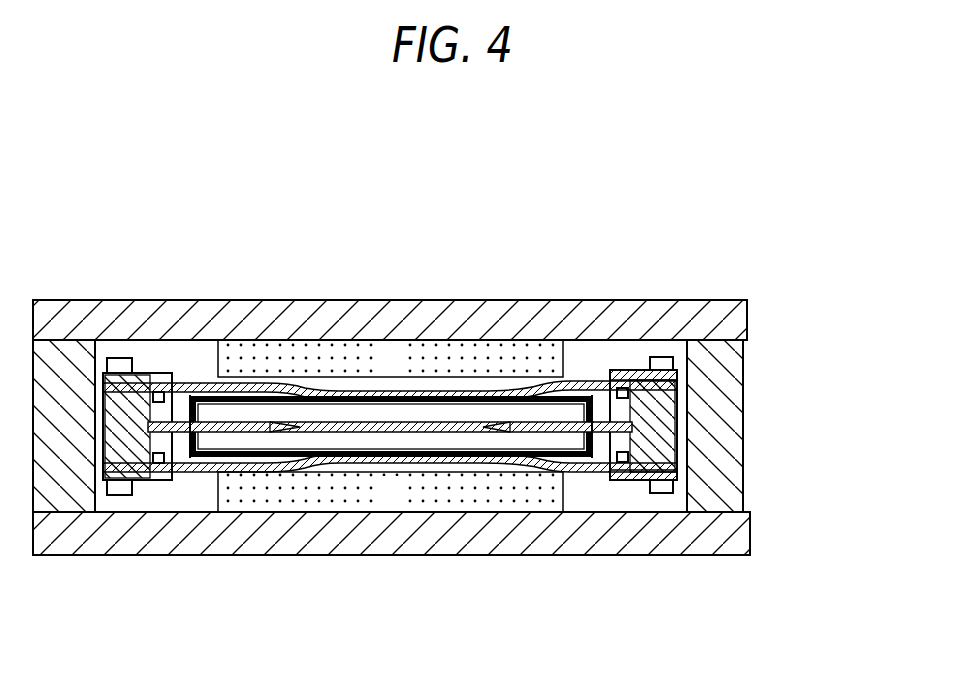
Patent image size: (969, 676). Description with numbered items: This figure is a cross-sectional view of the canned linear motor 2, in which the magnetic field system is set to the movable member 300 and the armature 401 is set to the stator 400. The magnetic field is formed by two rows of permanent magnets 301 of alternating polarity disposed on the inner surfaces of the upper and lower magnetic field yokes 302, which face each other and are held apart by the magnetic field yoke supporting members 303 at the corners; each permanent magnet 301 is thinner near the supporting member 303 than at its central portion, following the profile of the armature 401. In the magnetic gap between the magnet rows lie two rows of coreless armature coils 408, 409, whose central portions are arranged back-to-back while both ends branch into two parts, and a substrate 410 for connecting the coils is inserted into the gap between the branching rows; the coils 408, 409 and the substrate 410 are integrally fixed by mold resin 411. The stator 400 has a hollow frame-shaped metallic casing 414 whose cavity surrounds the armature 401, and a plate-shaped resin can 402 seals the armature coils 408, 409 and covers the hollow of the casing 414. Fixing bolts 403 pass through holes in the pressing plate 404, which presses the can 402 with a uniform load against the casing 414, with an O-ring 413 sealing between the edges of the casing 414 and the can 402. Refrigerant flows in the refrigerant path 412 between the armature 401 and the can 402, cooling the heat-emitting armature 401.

The canned linear motor 2 is at (743, 201).
The movable member 300 is at (707, 296).
The permanent magnet 301 is at (493, 350).
The magnetic field yoke 302 is at (722, 318).
The magnetic field yoke supporting member 303 is at (733, 360).
The stator 400 is at (622, 360).
The armature 401 is at (160, 396).
The can 402 is at (442, 392).
The fixing bolt 403 is at (663, 492).
The pressing plate 404 is at (665, 480).
The armature coil 408 is at (347, 415).
The armature coil 409 is at (352, 437).
The substrate 410 is at (598, 428).
The mold resin 411 is at (282, 455).
The refrigerant path 412 is at (417, 397).
The O-ring 413 is at (160, 462).
The casing 414 is at (663, 404).